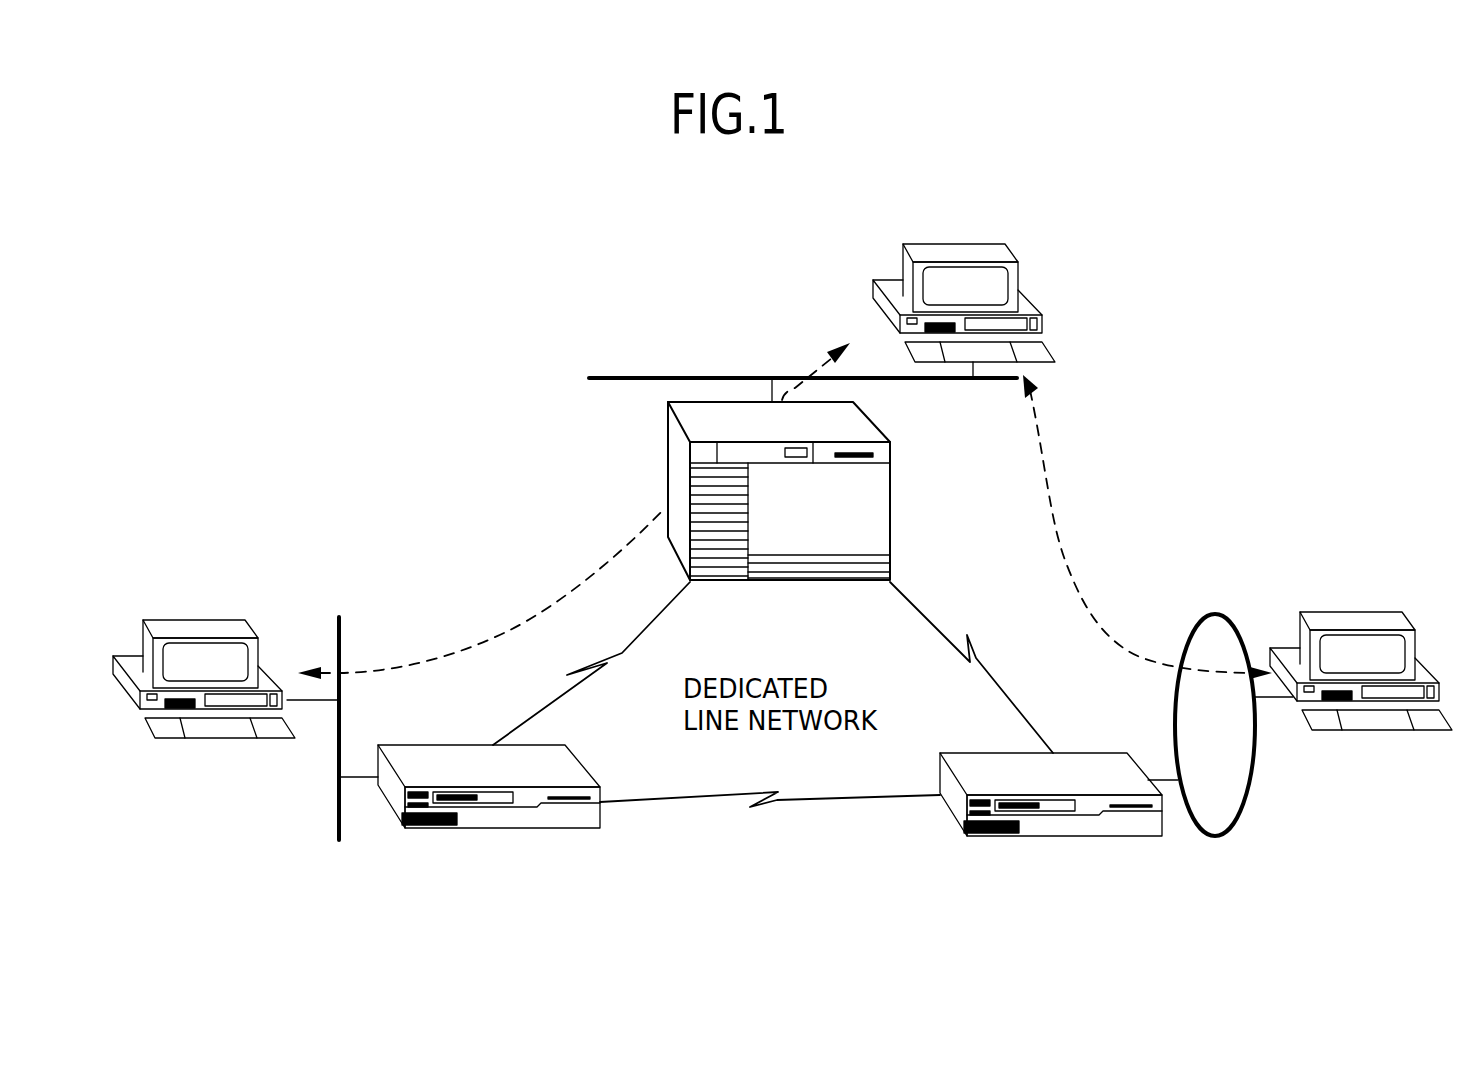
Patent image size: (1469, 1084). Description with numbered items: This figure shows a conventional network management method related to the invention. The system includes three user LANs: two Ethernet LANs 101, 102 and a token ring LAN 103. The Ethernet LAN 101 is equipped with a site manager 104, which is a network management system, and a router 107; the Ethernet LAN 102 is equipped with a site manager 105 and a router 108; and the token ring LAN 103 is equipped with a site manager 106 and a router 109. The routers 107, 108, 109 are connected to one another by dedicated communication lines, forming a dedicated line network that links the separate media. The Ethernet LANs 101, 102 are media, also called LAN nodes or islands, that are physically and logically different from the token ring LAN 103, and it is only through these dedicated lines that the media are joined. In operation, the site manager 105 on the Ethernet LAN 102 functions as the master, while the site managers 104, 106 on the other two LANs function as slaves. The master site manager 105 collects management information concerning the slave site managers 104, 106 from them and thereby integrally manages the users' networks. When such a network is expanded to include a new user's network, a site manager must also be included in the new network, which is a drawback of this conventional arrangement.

The Ethernet LAN 101 is at (343, 637).
The Ethernet LAN 102 is at (615, 385).
The token ring LAN 103 is at (1230, 837).
The site manager 104 is at (188, 622).
The site manager 105 is at (1020, 272).
The site manager 106 is at (1382, 613).
The router 107 is at (420, 828).
The router 108 is at (892, 513).
The router 109 is at (982, 835).